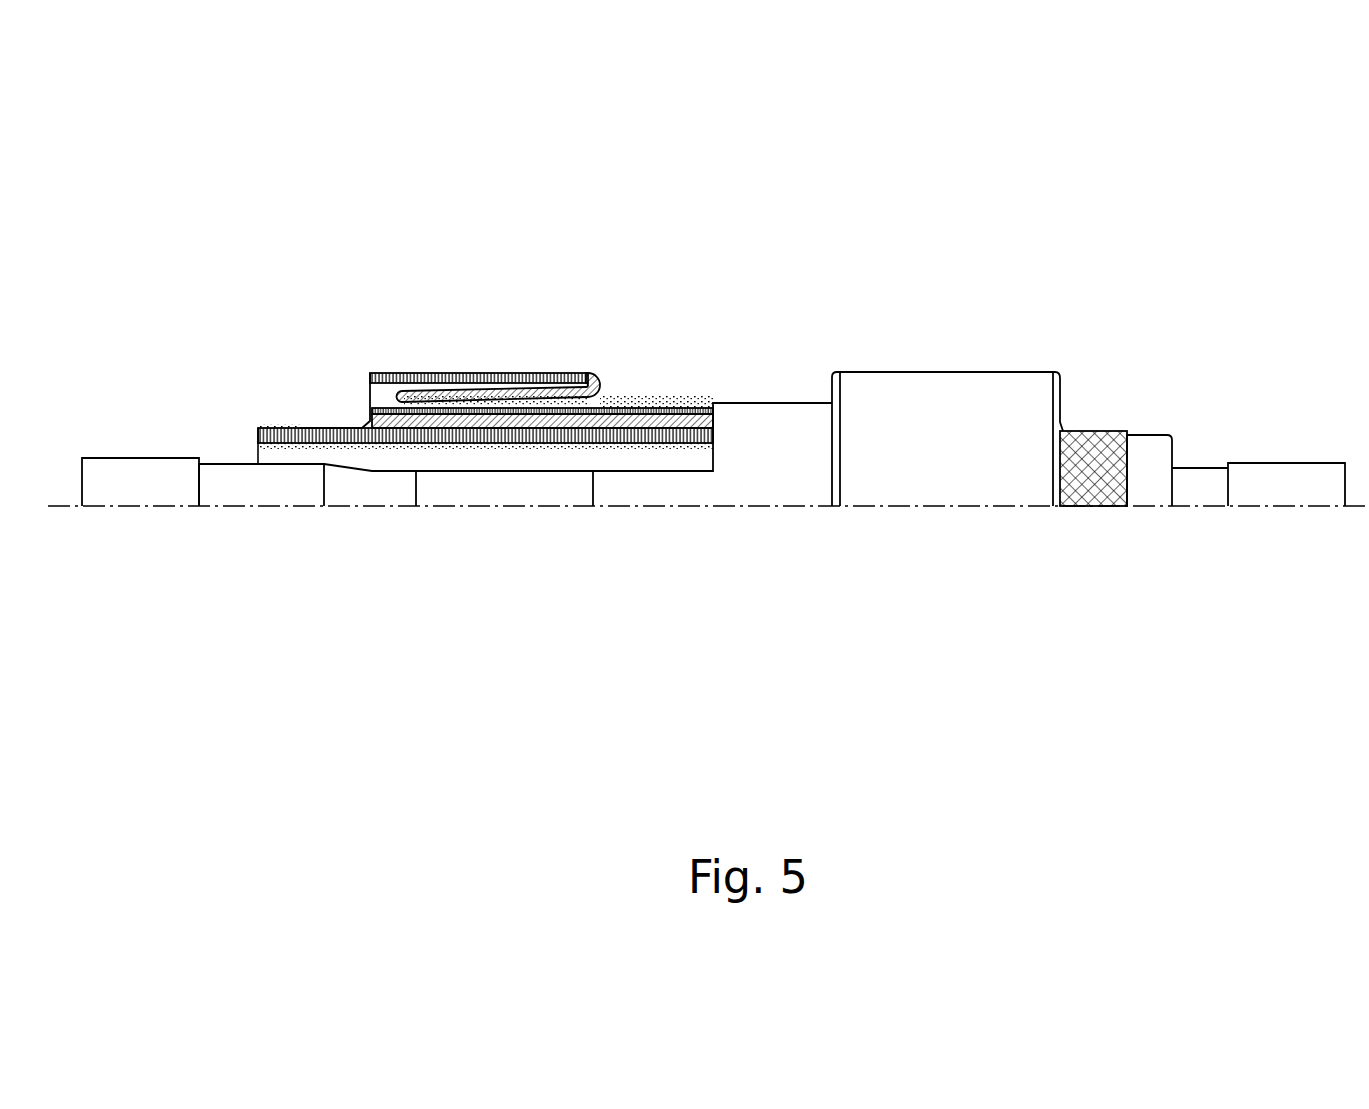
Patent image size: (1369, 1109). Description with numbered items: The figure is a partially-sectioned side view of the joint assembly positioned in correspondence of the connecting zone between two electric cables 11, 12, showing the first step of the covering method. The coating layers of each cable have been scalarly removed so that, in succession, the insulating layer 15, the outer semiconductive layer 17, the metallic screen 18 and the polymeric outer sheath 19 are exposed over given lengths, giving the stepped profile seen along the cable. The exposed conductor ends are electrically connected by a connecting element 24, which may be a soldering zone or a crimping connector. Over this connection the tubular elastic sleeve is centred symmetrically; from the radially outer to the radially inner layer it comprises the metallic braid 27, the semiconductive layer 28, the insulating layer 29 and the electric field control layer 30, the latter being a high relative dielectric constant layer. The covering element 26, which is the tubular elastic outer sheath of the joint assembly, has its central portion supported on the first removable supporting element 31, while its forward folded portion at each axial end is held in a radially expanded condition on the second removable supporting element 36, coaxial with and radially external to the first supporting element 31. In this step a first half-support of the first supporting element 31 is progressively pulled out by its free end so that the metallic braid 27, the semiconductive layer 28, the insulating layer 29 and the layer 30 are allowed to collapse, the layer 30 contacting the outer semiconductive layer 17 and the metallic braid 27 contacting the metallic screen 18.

The electric cable 11 is at (124, 404).
The electric cable 12 is at (1283, 557).
The insulating layer 15 is at (485, 490).
The outer semiconductive layer 17 is at (357, 490).
The metallic screen 18 is at (235, 493).
The polymeric outer sheath 19 is at (120, 488).
The connecting element 24 is at (672, 488).
The covering element 26 is at (623, 407).
The metallic braid 27 is at (322, 428).
The semiconductive layer 28 is at (710, 427).
The insulating layer 29 is at (602, 423).
The electric field control layer 30 is at (523, 434).
The first removable supporting element 31 is at (260, 428).
The second removable supporting element 36 is at (368, 380).